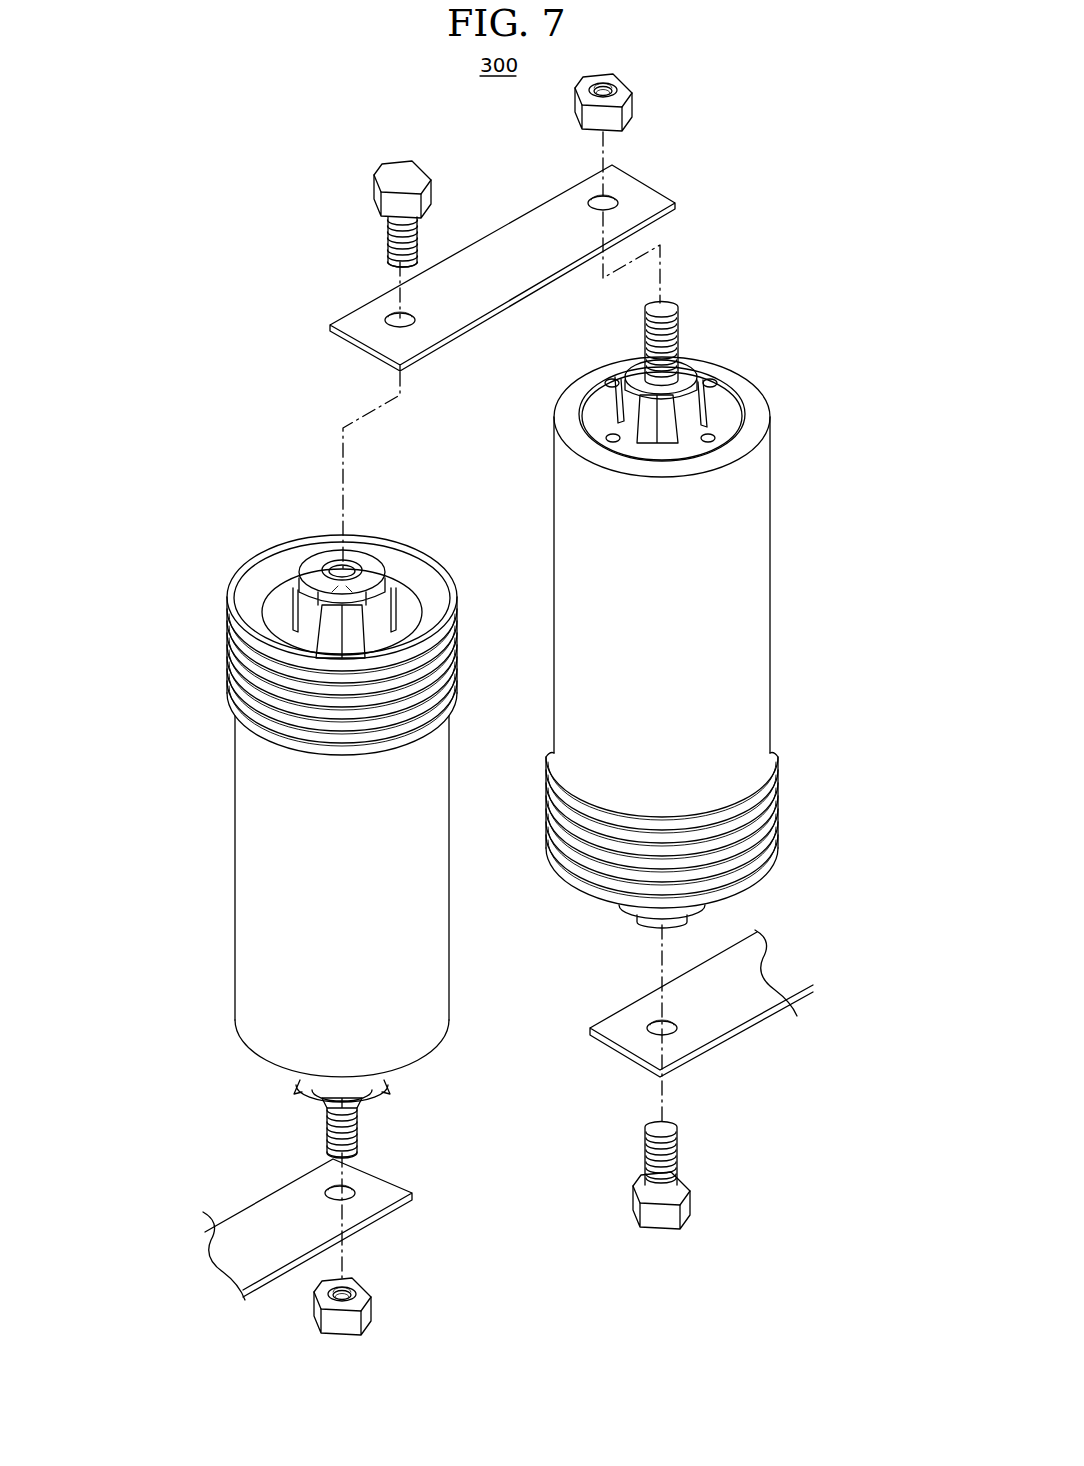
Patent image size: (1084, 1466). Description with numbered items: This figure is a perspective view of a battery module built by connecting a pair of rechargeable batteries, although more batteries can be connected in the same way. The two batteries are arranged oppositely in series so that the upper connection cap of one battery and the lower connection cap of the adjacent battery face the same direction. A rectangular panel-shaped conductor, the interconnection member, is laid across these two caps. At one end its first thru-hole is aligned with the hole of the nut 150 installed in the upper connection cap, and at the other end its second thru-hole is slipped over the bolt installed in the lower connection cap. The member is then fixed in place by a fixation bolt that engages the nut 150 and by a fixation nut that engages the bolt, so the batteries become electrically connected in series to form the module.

The nut 150 is at (378, 602).